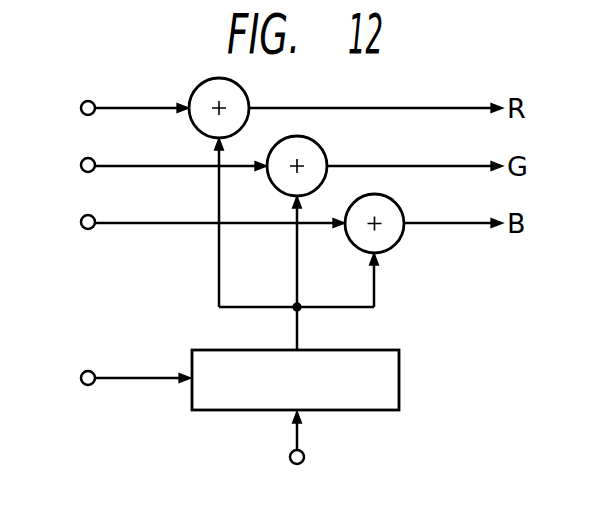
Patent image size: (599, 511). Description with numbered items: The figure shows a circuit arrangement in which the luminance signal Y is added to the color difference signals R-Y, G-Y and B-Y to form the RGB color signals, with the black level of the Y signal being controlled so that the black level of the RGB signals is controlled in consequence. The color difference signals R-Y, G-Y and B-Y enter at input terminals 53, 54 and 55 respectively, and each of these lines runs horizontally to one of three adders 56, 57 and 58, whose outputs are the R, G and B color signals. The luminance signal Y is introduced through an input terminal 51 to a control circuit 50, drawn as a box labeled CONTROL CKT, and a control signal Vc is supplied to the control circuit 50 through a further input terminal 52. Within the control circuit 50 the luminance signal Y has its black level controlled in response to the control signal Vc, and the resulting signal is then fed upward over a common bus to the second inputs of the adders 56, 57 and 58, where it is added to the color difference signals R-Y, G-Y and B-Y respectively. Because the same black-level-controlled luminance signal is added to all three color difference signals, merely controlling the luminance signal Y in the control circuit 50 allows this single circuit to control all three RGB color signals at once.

The control circuit 50 is at (400, 359).
The input terminal 51 is at (91, 371).
The input terminal 52 is at (304, 458).
The input terminal 53 is at (88, 101).
The input terminal 54 is at (93, 160).
The input terminal 55 is at (95, 217).
The adder 56 is at (248, 98).
The adder 57 is at (325, 154).
The adder 58 is at (403, 211).